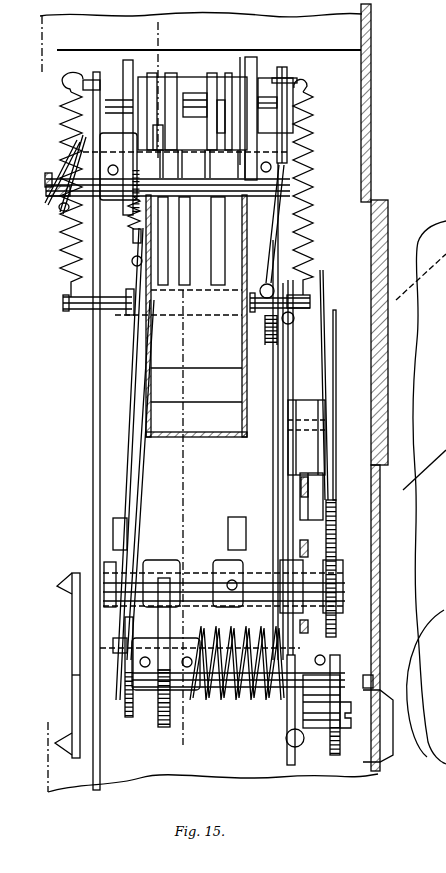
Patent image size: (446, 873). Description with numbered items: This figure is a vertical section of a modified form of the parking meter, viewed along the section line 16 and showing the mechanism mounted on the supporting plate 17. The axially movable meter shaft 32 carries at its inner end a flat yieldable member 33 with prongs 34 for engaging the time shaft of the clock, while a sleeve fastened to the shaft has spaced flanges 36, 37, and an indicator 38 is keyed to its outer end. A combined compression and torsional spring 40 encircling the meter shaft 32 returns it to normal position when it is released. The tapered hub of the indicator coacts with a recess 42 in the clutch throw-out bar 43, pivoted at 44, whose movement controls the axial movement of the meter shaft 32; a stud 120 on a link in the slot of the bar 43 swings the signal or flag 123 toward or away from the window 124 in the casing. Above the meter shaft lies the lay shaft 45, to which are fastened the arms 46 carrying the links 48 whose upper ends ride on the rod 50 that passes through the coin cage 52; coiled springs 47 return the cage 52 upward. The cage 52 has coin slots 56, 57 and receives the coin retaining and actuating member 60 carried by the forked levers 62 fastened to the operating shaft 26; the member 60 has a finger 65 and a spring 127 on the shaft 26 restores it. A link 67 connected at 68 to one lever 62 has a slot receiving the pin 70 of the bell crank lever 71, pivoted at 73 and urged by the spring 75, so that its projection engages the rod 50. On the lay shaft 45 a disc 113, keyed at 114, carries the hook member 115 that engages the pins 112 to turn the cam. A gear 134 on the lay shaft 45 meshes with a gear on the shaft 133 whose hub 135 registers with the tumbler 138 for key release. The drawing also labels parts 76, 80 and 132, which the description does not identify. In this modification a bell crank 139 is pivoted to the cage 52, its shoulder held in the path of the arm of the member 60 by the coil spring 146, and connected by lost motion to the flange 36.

The section line 16 is at (152, 22).
The supporting plate 17 is at (95, 366).
The operating shaft 26 is at (195, 186).
The meter shaft 32 is at (88, 652).
The flat yieldable member 33 is at (76, 710).
The prongs 34 is at (68, 574).
The flange 36 is at (128, 718).
The flange 37 is at (163, 728).
The indicator 38 is at (335, 322).
The combined compression and torsional spring 40 is at (226, 700).
The recess 42 is at (298, 676).
The clutch throw-out bar 43 is at (303, 746).
The pivot 44 is at (286, 737).
The lay shaft 45 is at (193, 575).
The collars or arms 46 is at (113, 522).
The coiled springs 47 is at (314, 130).
The links 48 is at (138, 492).
The shaft or rod 50 is at (75, 302).
The coin cage 52 is at (208, 358).
The coin slot 56 is at (168, 253).
The coin slot 57 is at (170, 266).
The coin retaining and actuating member 60 is at (190, 77).
The forked levers 62 is at (123, 63).
The finger 65 is at (84, 77).
The link 67 is at (270, 240).
The connection 68 is at (310, 144).
The pin or stud 70 is at (268, 292).
The bell crank lever 71 is at (282, 362).
The pivot 73 is at (292, 332).
The spring 75 is at (264, 320).
The bar 76 is at (290, 382).
The bar 80 is at (159, 578).
The pins or lugs 112 is at (305, 547).
The member or disc 113 is at (304, 480).
The key 114 is at (128, 464).
The hook member 115 is at (327, 440).
The stud 120 is at (300, 513).
The signal or flag 123 is at (323, 280).
The window 124 is at (383, 262).
The spring 127 is at (70, 216).
The rack bar 132 is at (333, 753).
The shaft 133 is at (322, 730).
The gear 134 is at (324, 485).
The hub 135 is at (347, 730).
The tumbler 138 is at (390, 756).
The bell crank 139 is at (134, 248).
The coil spring 146 is at (138, 207).